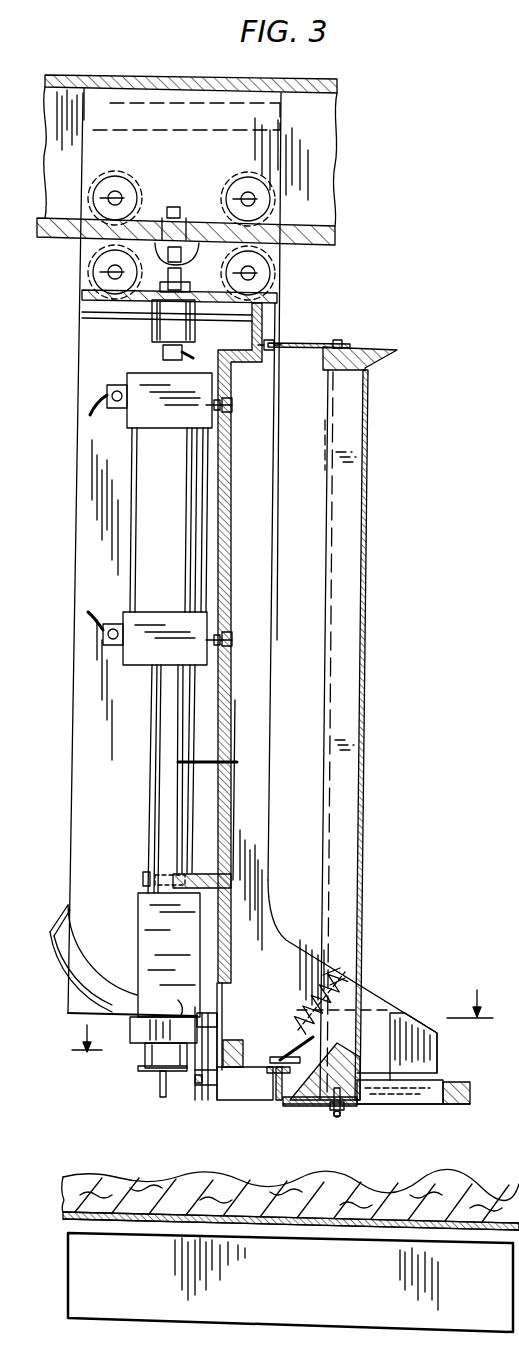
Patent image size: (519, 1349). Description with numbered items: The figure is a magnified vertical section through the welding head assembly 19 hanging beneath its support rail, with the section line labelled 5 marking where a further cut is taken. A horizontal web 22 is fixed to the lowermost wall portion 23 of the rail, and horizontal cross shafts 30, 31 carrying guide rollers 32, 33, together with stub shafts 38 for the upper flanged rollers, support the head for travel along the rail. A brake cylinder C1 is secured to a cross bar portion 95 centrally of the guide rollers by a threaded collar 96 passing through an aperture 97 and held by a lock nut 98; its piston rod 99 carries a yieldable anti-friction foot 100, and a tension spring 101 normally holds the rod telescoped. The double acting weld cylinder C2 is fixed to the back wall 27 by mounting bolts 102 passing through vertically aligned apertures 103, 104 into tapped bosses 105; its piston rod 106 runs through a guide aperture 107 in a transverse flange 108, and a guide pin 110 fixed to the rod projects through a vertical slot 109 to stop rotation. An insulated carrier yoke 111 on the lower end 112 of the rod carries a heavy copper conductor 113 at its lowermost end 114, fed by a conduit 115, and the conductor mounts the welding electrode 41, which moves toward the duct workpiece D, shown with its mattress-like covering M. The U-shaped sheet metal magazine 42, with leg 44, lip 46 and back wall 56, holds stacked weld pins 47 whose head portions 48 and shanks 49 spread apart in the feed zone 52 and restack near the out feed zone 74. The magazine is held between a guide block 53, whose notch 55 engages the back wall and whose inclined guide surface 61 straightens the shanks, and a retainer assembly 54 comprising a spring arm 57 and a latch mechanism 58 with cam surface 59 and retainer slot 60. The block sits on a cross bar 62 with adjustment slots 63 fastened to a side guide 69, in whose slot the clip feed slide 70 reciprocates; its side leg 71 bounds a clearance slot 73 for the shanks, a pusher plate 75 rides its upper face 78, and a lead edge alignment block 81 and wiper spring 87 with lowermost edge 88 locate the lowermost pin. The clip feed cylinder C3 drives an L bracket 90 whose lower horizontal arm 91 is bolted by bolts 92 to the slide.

The welding head assembly 19 is at (408, 502).
The web 22 is at (327, 237).
The lowermost wall portion 23 is at (308, 223).
The back wall 27 is at (227, 542).
The horizontal cross shaft 30 is at (255, 276).
The horizontal cross shaft 31 is at (84, 296).
The guide roller 32 is at (283, 254).
The guide roller 33 is at (88, 268).
The stub shaft 38 is at (90, 199).
The welding electrode 41 is at (148, 1066).
The magazine container 42 is at (368, 590).
The magazine leg 44 is at (349, 666).
The magazine lip 46 is at (322, 747).
The weld pin 47 is at (283, 1058).
The head portion 48 is at (333, 968).
The shank portion 49 is at (332, 984).
The feed zone 52 is at (344, 1050).
The guide block 53 is at (312, 1100).
The magazine retainer assembly 54 is at (337, 336).
The notch 55 is at (366, 1095).
The back wall of magazine 56 is at (362, 746).
The spring arm 57 is at (290, 343).
The latch mechanism 58 is at (376, 347).
The cam surface 59 is at (372, 356).
The retainer slot 60 is at (367, 364).
The inclined guide surface 61 is at (295, 1100).
The cross bar 62 is at (343, 1112).
The adjustment slot 63 is at (334, 1110).
The side guide 69 is at (440, 1040).
The clip feed slide 70 is at (471, 1100).
The side leg of feed slide 71 is at (407, 1093).
The clearance slot 73 is at (435, 1100).
The out feed zone 74 is at (242, 1028).
The pusher plate 75 is at (343, 1042).
The upper face of slide 78 is at (440, 1082).
The lead edge alignment block 81 is at (232, 1060).
The wiper spring 87 is at (230, 955).
The lowermost edge of wiper spring 88 is at (228, 1068).
The L bracket 90 is at (183, 986).
The lower horizontal arm 91 is at (205, 1100).
The bolt 92 is at (197, 1083).
The cross bar portion 95 is at (102, 317).
The threaded collar 96 is at (258, 312).
The aperture 97 is at (160, 300).
The lock nut 98 is at (185, 267).
The piston rod 99 is at (201, 250).
The anti-friction foot 100 is at (175, 222).
The tension spring 101 is at (167, 215).
The mounting bolt 102 is at (232, 405).
The aperture 103 is at (225, 625).
The aperture 104 is at (225, 430).
The enlarged boss 105 is at (127, 378).
The piston rod 106 is at (158, 757).
The guide aperture 107 is at (148, 862).
The transverse flange 108 is at (143, 880).
The vertical slot 109 is at (231, 812).
The guide pin 110 is at (232, 765).
The insulated carrier yoke 111 is at (187, 913).
The lower end of piston rod 112 is at (163, 887).
The copper conductor 113 is at (145, 1035).
The lowermost end of yoke 114 is at (162, 1003).
The conduit 115 is at (100, 968).
The section line 5- 5 is at (279, 1018).
The brake cylinder C1 is at (155, 340).
The weld cylinder C2 is at (140, 447).
The clip feed cylinder C3 is at (420, 1010).
The mattress M is at (488, 1190).
The duct workpiece D is at (364, 1222).